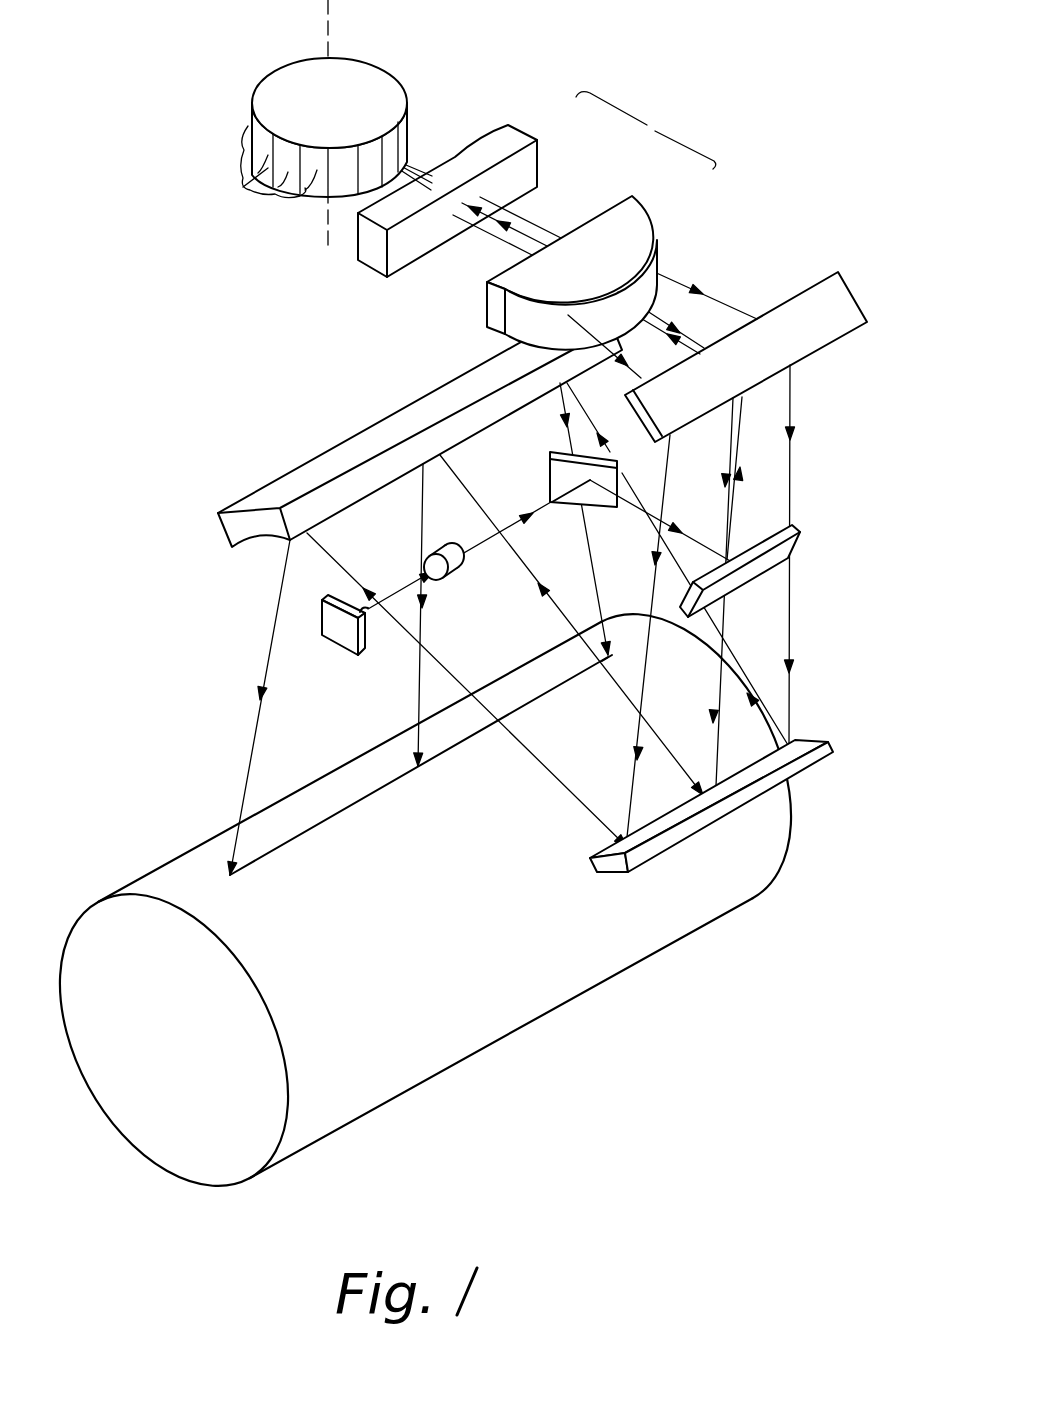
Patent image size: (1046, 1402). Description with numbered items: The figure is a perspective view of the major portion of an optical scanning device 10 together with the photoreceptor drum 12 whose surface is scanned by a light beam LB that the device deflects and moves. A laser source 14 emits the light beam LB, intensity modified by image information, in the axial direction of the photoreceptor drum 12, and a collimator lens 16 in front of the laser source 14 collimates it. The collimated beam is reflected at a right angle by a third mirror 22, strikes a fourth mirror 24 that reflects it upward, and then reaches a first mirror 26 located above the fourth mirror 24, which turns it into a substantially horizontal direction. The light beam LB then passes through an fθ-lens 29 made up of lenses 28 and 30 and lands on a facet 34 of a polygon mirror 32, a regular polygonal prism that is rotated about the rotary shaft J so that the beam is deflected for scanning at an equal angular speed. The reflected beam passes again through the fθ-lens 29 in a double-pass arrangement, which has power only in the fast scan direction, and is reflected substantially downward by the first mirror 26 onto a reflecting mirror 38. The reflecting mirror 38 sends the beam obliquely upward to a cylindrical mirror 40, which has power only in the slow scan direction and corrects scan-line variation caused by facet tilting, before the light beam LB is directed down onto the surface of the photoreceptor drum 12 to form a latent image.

The optical scanning device 10 is at (772, 182).
The photoreceptor drum 12 is at (122, 888).
The laser source 14 is at (344, 646).
The collimator lens 16 is at (460, 576).
The third mirror 22 is at (550, 472).
The fourth mirror 24 is at (803, 530).
The first mirror 26 is at (851, 292).
The lens 28 is at (642, 197).
The fθ-lens 29 is at (646, 130).
The lens 30 is at (533, 134).
The polygon mirror 32 is at (402, 81).
The facet 34 is at (243, 188).
The reflecting mirror 38 is at (797, 770).
The cylindrical mirror 40 is at (364, 431).
The rotary shaft J is at (322, 20).
The light beam LB is at (682, 283).